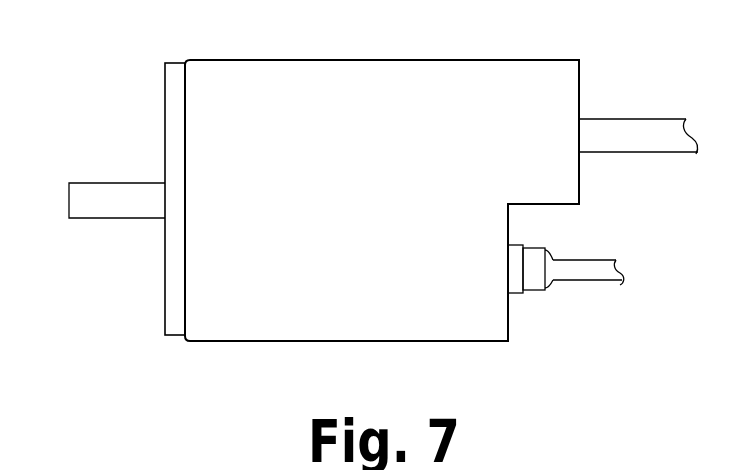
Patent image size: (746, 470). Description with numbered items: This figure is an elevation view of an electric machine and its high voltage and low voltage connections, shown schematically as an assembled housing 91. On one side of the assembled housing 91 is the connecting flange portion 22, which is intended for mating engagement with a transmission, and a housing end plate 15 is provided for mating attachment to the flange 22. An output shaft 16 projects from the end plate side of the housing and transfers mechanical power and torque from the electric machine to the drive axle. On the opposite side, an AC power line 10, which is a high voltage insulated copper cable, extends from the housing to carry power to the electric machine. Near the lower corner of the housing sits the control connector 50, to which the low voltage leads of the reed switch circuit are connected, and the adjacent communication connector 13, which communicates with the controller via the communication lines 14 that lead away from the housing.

The assembled housing 91 is at (355, 73).
The housing end plate 15 is at (174, 79).
The connecting flange portion 22 is at (183, 305).
The output shaft 16 is at (91, 214).
The AC power line 10 is at (637, 128).
The control connector 50 is at (515, 290).
The communication connector 13 is at (535, 252).
The communication lines 14 is at (604, 272).